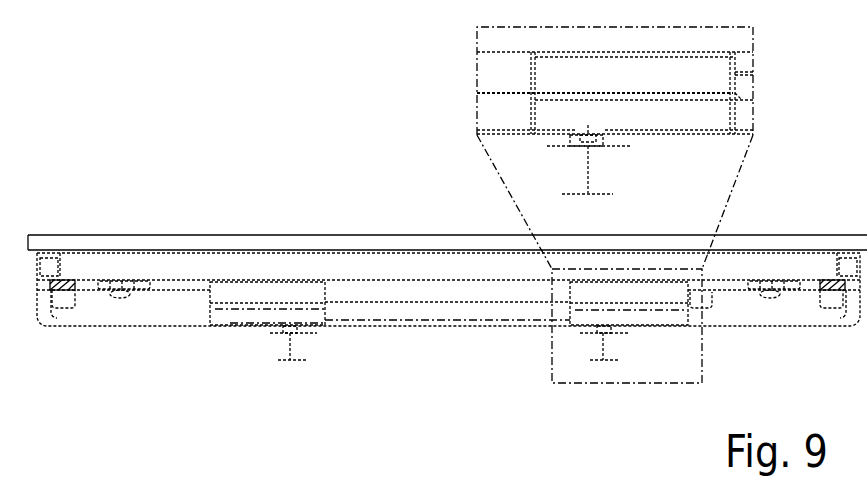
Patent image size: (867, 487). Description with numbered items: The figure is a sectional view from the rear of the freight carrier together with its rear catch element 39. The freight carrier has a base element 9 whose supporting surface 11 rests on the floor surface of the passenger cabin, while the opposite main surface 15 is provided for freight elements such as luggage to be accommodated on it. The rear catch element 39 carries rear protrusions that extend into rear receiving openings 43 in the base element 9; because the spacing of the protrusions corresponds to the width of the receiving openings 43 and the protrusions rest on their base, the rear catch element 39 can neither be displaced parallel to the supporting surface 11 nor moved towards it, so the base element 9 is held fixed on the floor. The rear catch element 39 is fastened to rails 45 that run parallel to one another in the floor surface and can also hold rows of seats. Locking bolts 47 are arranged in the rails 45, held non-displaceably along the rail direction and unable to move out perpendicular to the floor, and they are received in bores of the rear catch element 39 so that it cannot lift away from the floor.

The base element 9 is at (307, 263).
The supporting surface 11 is at (115, 326).
The main surface 15 is at (93, 242).
The rear catch element 39 is at (435, 310).
The rear receiving opening 43 is at (252, 290).
The rail 45 is at (290, 348).
The locking bolt 47 is at (588, 125).